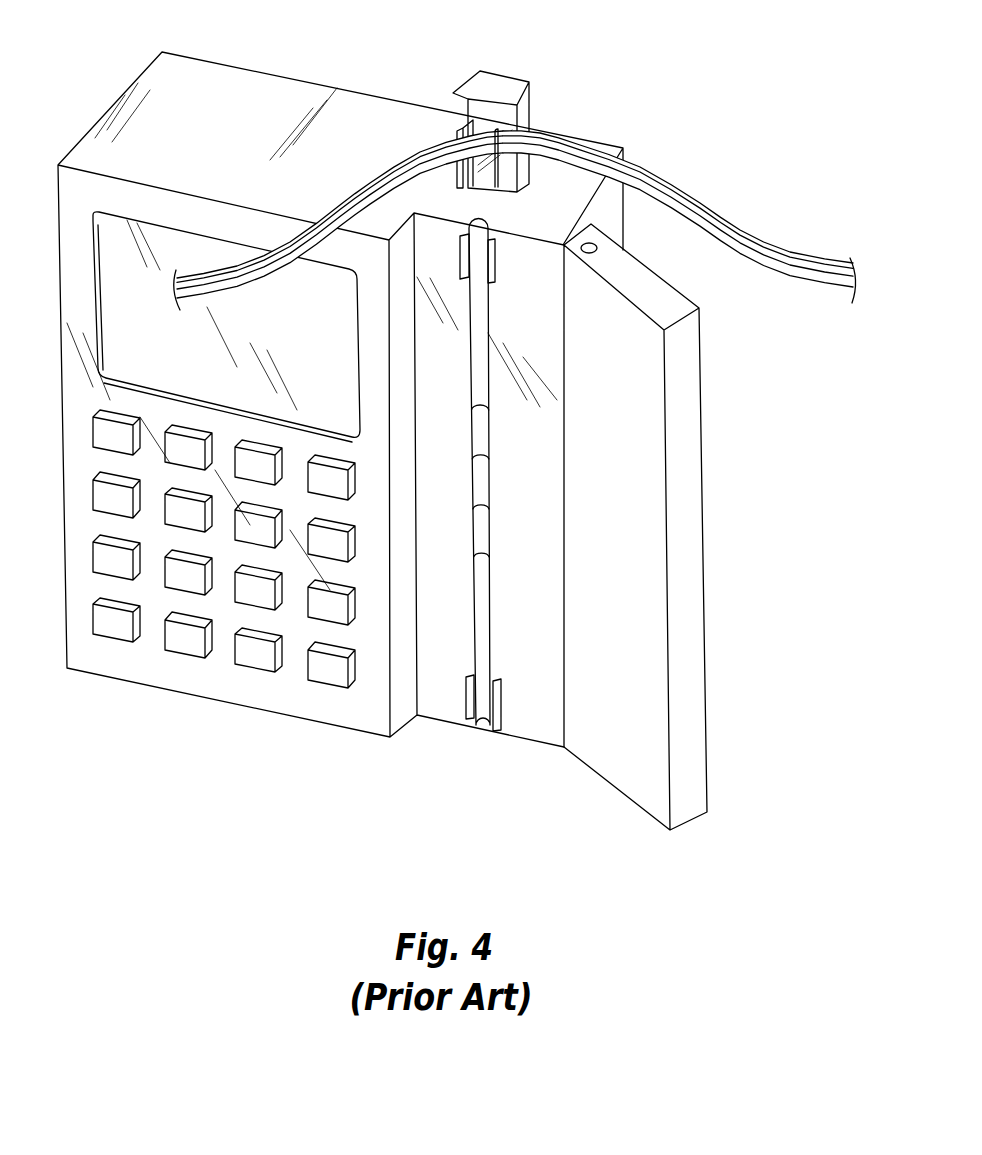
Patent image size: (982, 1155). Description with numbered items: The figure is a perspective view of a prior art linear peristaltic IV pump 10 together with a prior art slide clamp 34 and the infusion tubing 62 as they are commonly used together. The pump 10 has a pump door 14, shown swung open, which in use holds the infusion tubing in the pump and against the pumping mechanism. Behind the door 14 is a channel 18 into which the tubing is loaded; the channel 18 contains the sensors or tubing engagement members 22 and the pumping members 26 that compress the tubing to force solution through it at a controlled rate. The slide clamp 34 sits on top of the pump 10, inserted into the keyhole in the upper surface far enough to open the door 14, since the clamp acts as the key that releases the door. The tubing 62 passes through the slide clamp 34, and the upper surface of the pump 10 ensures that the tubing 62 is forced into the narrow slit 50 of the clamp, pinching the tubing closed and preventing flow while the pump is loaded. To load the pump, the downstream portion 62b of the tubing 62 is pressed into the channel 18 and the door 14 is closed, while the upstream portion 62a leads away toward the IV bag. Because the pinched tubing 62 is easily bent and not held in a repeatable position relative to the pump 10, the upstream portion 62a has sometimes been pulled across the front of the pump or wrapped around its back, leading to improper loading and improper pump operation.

The pump 10 is at (188, 83).
The pump door 14 is at (623, 413).
The channel 18 is at (482, 635).
The tubing engagement members 22 is at (493, 262).
The pumping members 26 is at (483, 487).
The slide clamp 34 is at (495, 87).
The narrow slit 50 is at (512, 130).
The tubing 62 is at (515, 206).
The upstream portion 62a is at (722, 232).
The downstream portion 62b is at (240, 273).